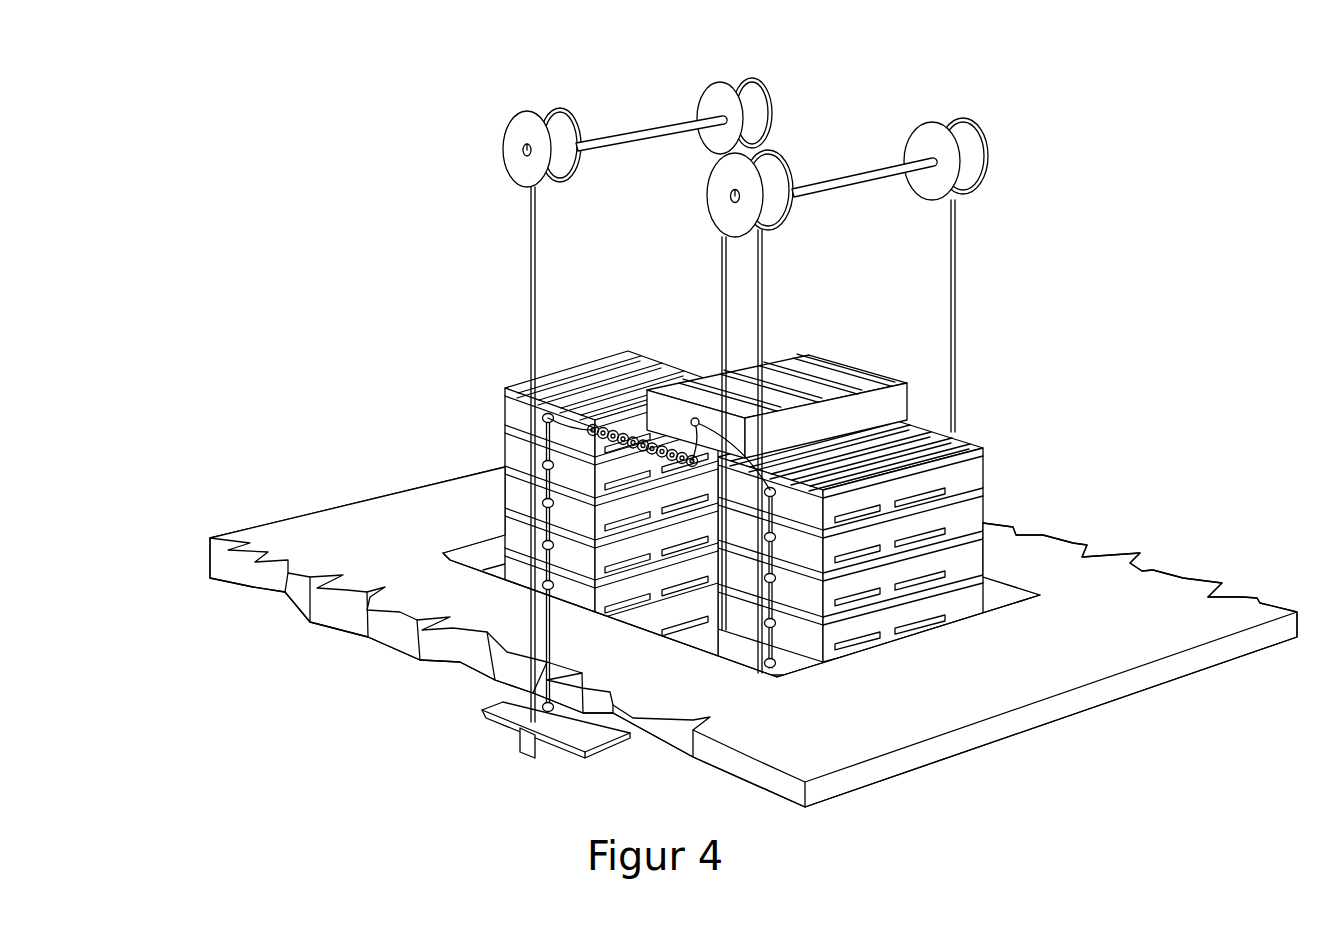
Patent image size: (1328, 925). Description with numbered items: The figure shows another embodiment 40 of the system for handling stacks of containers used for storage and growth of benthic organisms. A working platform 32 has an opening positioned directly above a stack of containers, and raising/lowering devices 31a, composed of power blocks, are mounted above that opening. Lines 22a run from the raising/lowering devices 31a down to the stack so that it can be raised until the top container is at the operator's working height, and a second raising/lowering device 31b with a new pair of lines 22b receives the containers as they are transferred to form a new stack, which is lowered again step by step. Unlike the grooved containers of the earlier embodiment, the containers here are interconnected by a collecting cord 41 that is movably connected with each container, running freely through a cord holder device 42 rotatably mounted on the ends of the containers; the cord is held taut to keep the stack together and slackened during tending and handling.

The lines 22a is at (527, 248).
The pair of lines 22b is at (960, 258).
The raising/lowering devices 31a is at (760, 80).
The raising/lowering device 31b is at (987, 137).
The working platform 32 is at (758, 560).
The embodiment 40 is at (1180, 351).
The collecting cord 41 is at (567, 422).
The cord holder device 42 is at (535, 425).